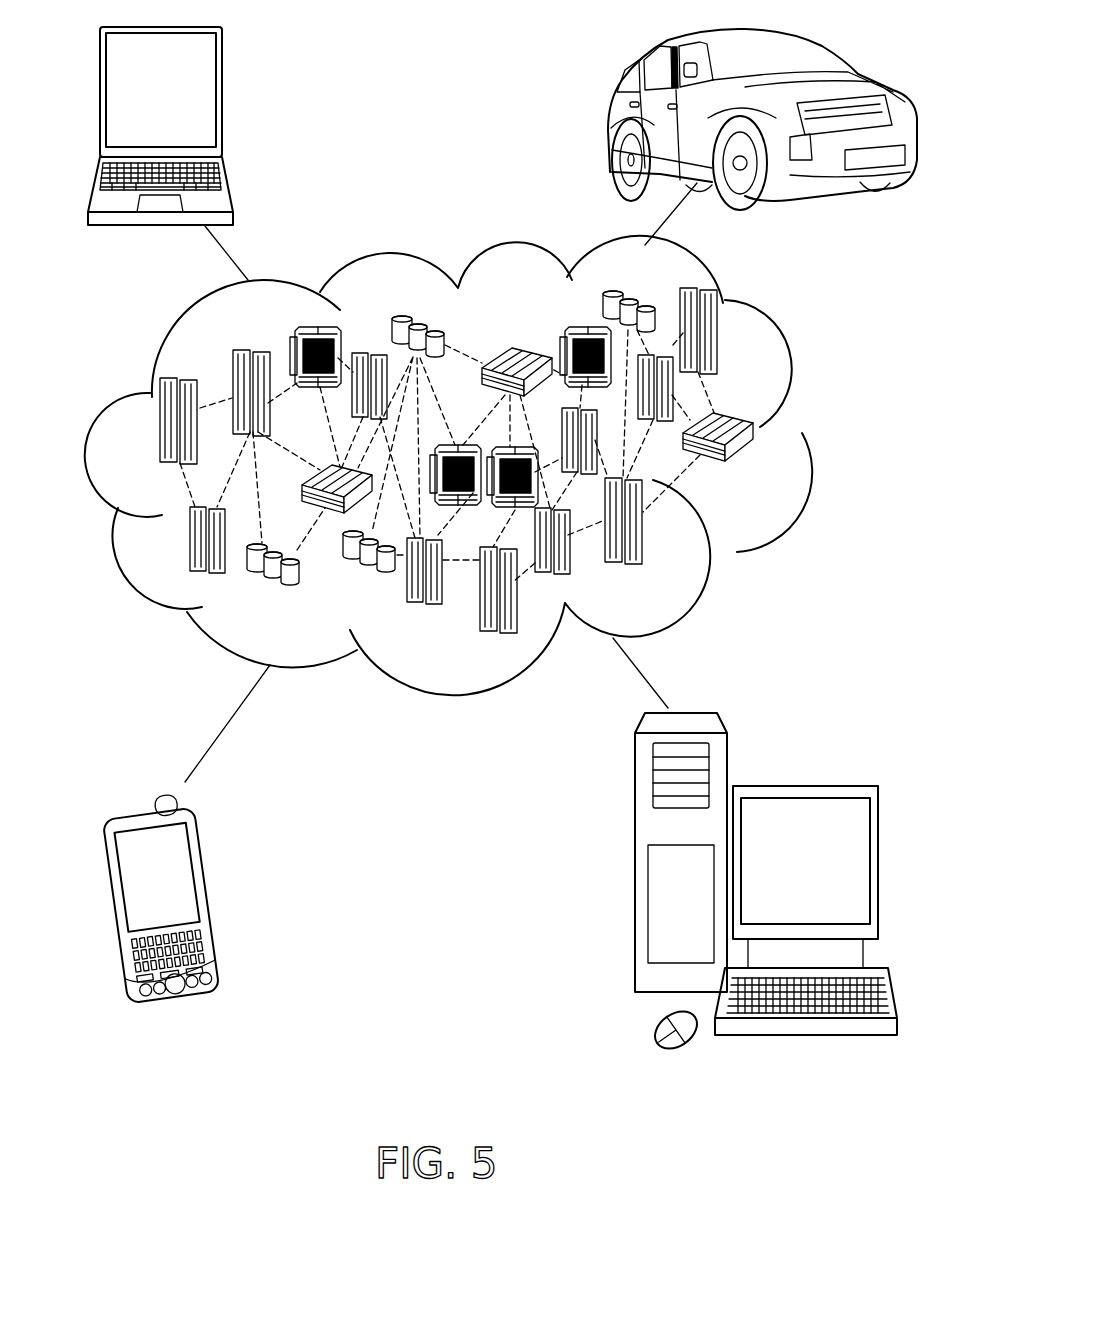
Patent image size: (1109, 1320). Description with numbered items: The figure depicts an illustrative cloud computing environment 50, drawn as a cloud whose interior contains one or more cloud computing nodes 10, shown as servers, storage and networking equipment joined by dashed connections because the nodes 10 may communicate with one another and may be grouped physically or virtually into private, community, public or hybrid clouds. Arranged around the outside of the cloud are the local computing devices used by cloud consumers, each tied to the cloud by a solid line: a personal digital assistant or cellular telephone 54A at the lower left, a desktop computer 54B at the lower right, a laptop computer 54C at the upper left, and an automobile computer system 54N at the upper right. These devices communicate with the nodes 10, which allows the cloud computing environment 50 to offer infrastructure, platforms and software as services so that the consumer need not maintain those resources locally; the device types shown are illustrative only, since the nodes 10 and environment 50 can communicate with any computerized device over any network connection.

The cloud computing node 10 is at (763, 472).
The cloud computing environment 50 is at (802, 433).
The personal digital assistant (PDA) or cellular telephone 54A is at (212, 896).
The desktop computer 54B is at (802, 784).
The laptop computer 54C is at (222, 99).
The automobile computer system 54N is at (607, 120).